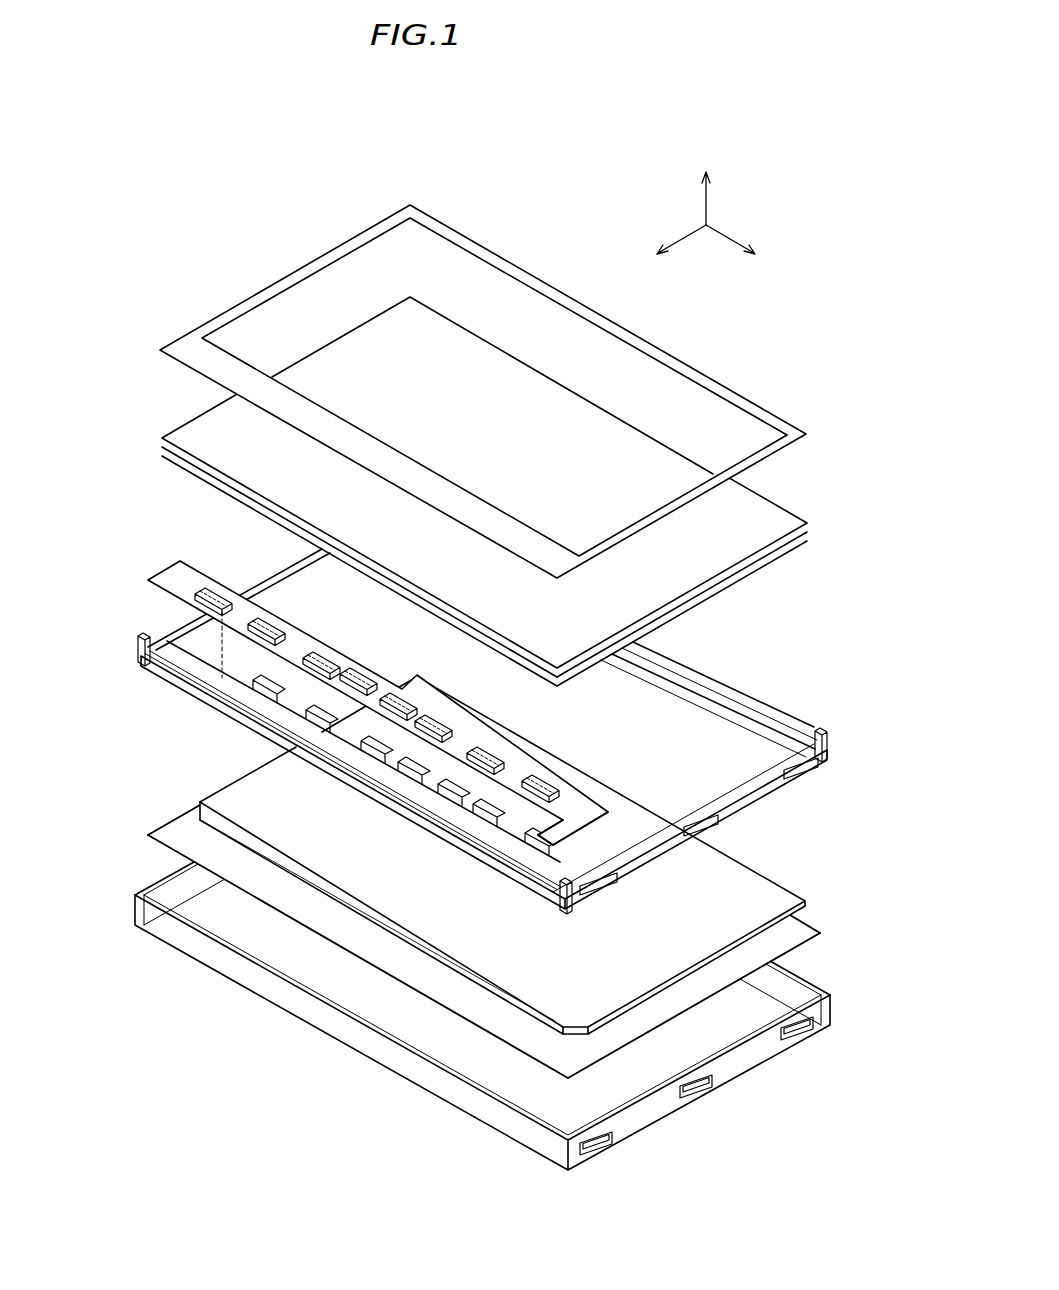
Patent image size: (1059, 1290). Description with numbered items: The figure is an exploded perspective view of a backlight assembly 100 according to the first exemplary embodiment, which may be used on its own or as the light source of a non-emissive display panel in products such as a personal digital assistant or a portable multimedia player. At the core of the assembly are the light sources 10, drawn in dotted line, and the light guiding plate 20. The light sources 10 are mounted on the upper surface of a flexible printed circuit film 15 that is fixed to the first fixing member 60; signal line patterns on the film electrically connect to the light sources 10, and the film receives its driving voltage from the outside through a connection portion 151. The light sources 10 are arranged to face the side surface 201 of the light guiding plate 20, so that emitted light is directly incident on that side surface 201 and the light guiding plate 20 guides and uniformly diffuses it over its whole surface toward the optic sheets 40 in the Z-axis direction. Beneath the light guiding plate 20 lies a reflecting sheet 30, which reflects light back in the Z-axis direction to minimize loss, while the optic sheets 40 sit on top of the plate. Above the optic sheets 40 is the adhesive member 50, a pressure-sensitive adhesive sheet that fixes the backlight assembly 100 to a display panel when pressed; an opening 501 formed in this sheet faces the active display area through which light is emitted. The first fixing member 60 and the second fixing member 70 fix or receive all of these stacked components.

The backlight assembly 100 is at (292, 176).
The adhesive member 50 is at (459, 382).
The opening 501 is at (438, 262).
The optic sheets 40 is at (147, 437).
The light source 10 is at (200, 590).
The flexible printed circuit film 15 is at (347, 739).
The connection portion 151 is at (548, 840).
The first fixing member 60 is at (137, 650).
The light guiding plate 20 is at (479, 855).
The side surface 201 is at (313, 889).
The reflecting sheet 30 is at (160, 847).
The second fixing member 70 is at (134, 908).